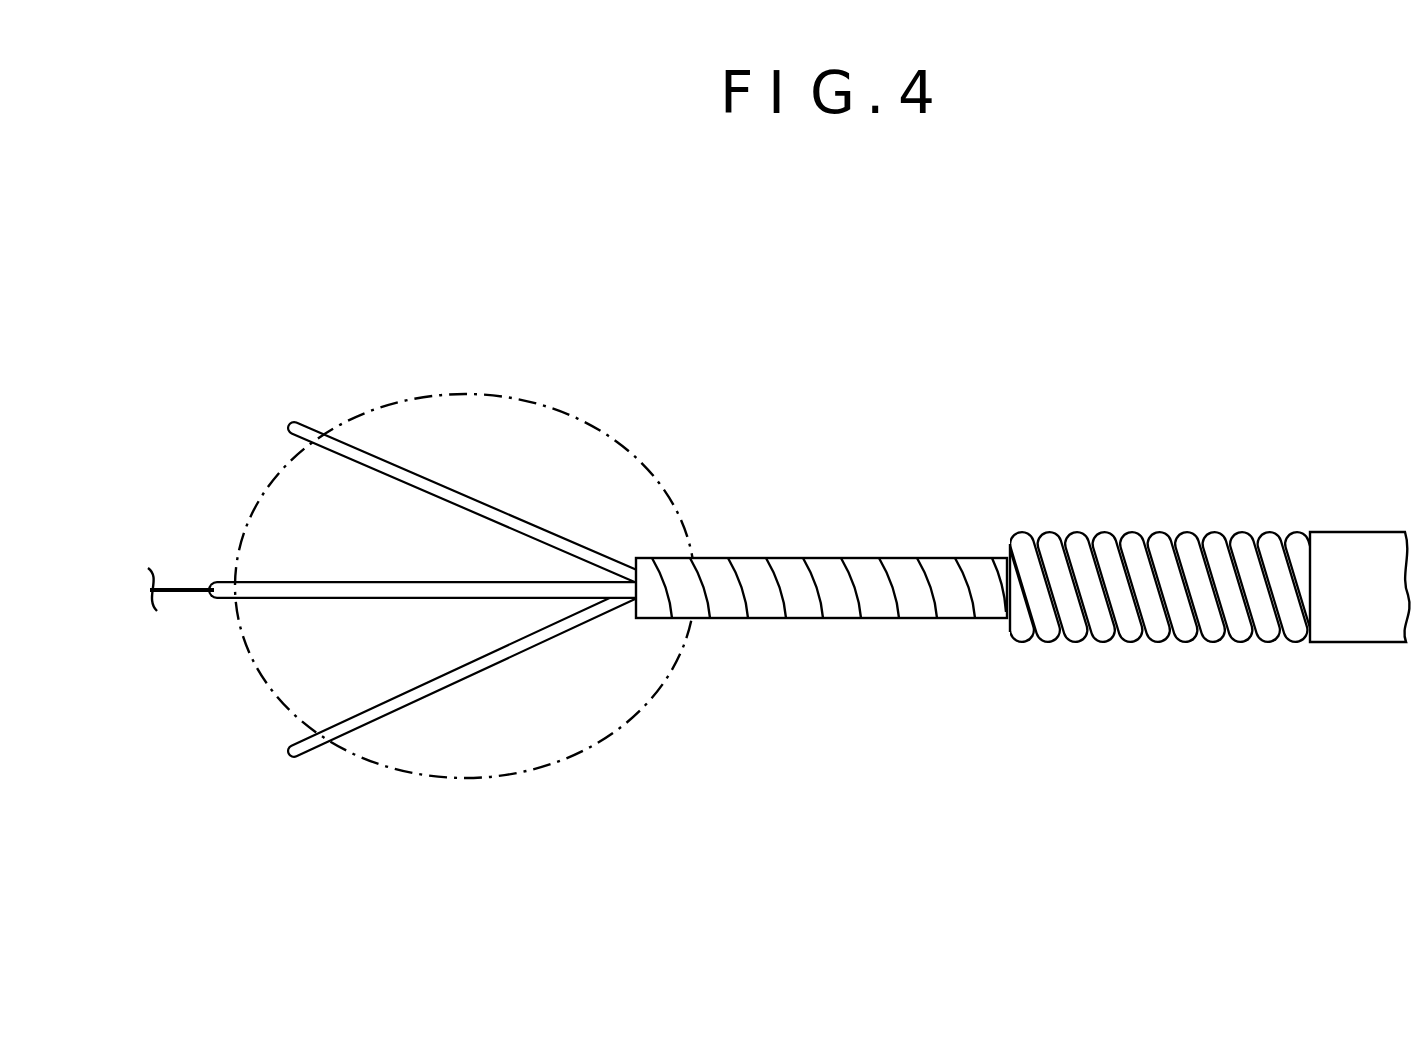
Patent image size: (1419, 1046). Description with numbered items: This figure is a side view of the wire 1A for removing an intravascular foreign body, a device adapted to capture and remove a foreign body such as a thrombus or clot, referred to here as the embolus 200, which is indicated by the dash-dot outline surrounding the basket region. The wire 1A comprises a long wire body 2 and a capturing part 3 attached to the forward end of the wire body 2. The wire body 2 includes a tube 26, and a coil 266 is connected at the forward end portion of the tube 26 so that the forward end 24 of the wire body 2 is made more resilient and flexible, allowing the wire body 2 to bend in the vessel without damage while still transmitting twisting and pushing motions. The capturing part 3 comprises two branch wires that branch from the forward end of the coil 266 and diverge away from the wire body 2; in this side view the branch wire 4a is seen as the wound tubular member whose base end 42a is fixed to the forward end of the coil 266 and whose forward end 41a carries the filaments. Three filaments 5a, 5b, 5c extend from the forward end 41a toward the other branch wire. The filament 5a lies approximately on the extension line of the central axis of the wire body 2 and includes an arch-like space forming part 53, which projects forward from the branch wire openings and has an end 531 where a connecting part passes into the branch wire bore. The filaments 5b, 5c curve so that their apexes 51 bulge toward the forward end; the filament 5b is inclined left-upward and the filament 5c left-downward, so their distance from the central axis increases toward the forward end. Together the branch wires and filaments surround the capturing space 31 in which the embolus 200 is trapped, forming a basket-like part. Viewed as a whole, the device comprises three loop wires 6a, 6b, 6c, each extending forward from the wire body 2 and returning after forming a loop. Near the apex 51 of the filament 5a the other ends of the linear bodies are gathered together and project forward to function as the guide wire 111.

The wire for removing an intravascular foreign body 1A is at (1102, 283).
The wire body 2 is at (1285, 437).
The forward end of the wire body 24 is at (1327, 498).
The tube 26 is at (1368, 545).
The coil 266 is at (1107, 530).
The capturing part 3 is at (757, 639).
The capturing space 31 is at (488, 623).
The branch wire 4a is at (797, 603).
The forward end of the branch wire 41a is at (683, 595).
The base end of the branch wire 42a is at (987, 603).
The filament 5a is at (313, 590).
The filament 5b is at (418, 483).
The filament 5c is at (430, 687).
The apex 51 is at (297, 421).
The space forming part 53 is at (340, 593).
The end of the space forming part 531 is at (607, 602).
The loop wire 6a is at (275, 598).
The loop wire 6b is at (490, 517).
The loop wire 6c is at (358, 722).
The guide wire 111 is at (173, 592).
The embolus 200 is at (645, 440).